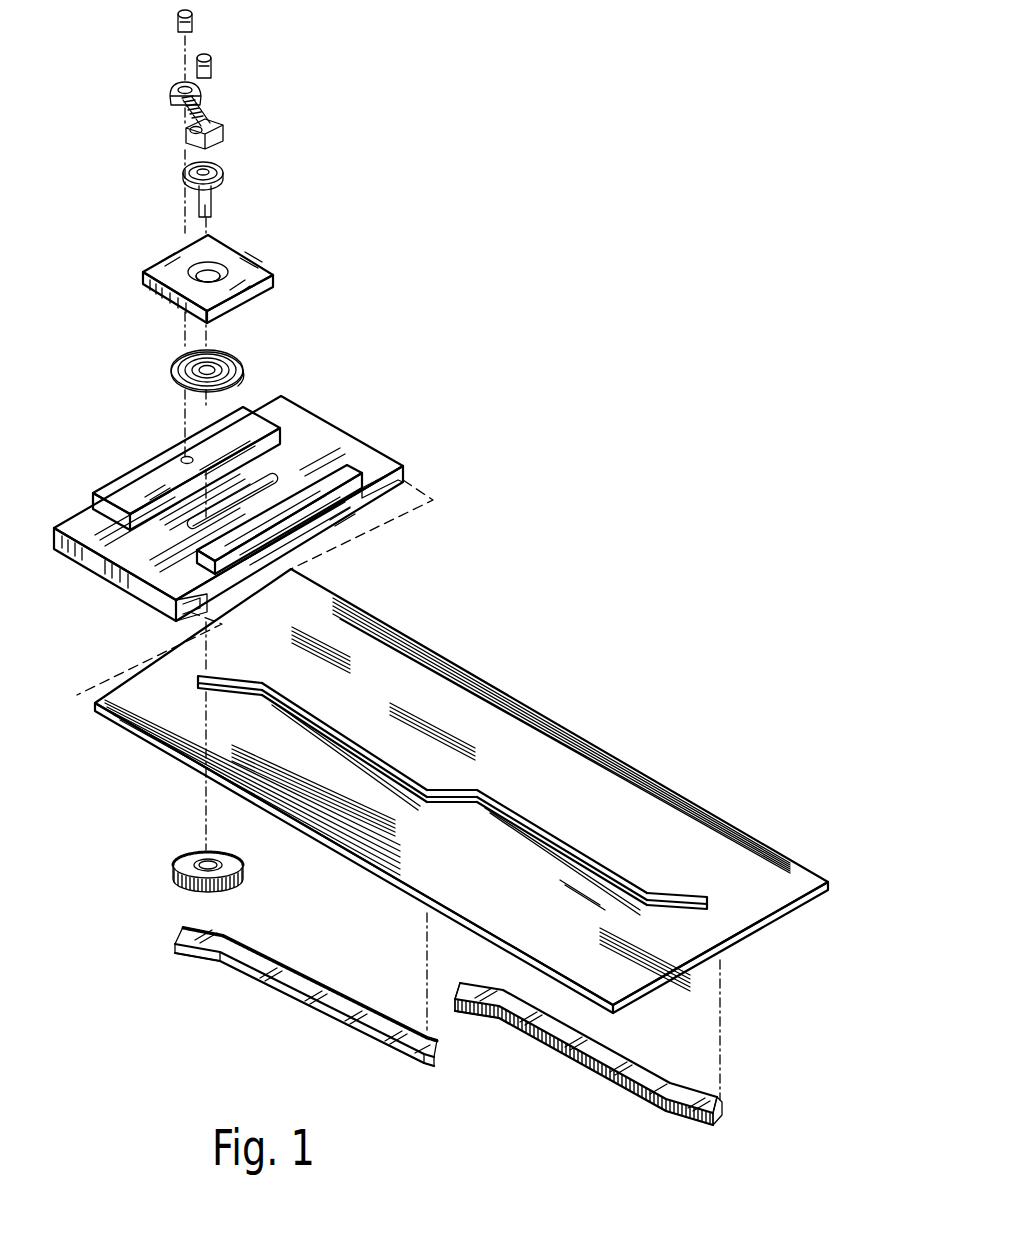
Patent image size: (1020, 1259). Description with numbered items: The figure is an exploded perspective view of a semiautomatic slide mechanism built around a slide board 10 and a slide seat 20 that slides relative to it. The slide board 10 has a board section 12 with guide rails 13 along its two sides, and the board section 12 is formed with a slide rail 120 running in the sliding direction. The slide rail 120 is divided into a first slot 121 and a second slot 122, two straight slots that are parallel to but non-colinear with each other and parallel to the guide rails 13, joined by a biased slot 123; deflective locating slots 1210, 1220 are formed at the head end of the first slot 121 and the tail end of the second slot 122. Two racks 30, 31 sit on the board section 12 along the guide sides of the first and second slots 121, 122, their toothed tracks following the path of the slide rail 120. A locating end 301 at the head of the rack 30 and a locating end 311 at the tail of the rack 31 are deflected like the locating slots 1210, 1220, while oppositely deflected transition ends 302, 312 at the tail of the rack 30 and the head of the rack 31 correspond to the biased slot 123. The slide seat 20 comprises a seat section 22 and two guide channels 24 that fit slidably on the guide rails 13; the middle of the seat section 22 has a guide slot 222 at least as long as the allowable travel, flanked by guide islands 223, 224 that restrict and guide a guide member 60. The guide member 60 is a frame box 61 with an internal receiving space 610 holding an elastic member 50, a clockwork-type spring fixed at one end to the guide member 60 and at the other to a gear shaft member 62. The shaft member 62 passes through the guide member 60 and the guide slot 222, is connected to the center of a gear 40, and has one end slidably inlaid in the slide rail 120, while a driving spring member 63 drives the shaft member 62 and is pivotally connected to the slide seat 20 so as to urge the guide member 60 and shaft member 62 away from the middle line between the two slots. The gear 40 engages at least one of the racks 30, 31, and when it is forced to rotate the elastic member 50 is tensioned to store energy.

The slide board 10 is at (742, 960).
The board section 12 is at (424, 880).
The guide rails 13 is at (776, 848).
The slide rail 120 is at (583, 618).
The first slot 121 is at (470, 698).
The second slot 122 is at (614, 863).
The biased slot 123 is at (456, 782).
The locating slot 1210 is at (218, 692).
The locating slot 1220 is at (681, 890).
The slide seat 20 is at (394, 444).
The seat section 22 is at (140, 574).
The guide slot 222 is at (279, 478).
The guide island 223 is at (144, 478).
The guide island 224 is at (326, 498).
The guide channels 24 is at (400, 492).
The rack 30 is at (292, 1004).
The locating end 301 is at (191, 937).
The transition end 302 is at (438, 1050).
The rack 31 is at (651, 1080).
The locating end 311 is at (704, 1100).
The transition end 312 is at (481, 985).
The gear 40 is at (186, 865).
The elastic member 50 is at (245, 348).
The guide member 60 is at (265, 257).
The frame box 61 is at (164, 268).
The receiving space 610 is at (168, 305).
The gear shaft member 62 is at (221, 190).
The driving spring member 63 is at (216, 106).